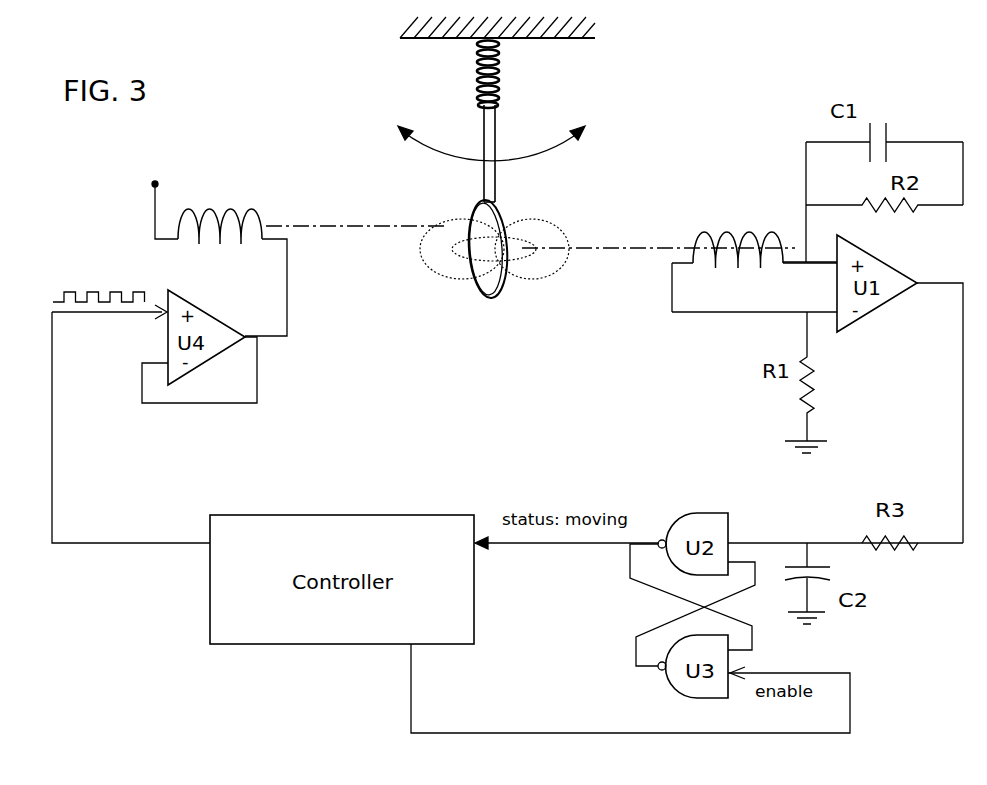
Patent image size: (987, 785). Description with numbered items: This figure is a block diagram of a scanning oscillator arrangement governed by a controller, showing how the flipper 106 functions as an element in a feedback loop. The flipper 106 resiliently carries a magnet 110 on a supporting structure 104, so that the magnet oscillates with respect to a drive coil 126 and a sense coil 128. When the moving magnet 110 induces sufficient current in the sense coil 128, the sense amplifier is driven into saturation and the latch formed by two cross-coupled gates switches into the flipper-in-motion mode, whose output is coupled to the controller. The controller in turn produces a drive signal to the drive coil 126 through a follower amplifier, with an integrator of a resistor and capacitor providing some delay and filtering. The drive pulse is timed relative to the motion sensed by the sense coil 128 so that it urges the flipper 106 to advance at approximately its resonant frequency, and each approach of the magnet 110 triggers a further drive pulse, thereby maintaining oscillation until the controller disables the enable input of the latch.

The structure 104 is at (427, 40).
The flipper 106 is at (490, 137).
The magnet 110 is at (492, 283).
The drive coil 126 is at (262, 226).
The sense coil 128 is at (736, 230).